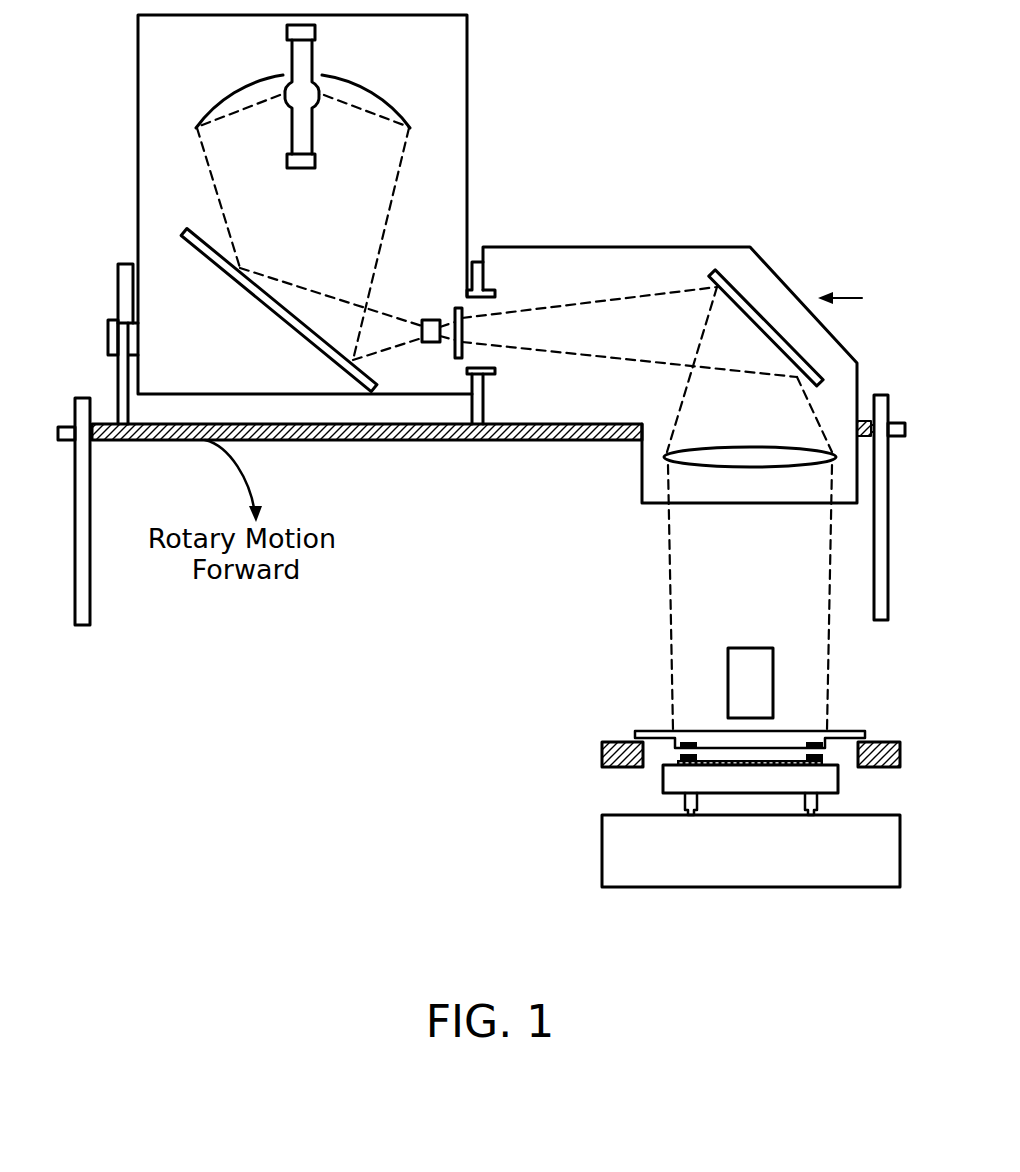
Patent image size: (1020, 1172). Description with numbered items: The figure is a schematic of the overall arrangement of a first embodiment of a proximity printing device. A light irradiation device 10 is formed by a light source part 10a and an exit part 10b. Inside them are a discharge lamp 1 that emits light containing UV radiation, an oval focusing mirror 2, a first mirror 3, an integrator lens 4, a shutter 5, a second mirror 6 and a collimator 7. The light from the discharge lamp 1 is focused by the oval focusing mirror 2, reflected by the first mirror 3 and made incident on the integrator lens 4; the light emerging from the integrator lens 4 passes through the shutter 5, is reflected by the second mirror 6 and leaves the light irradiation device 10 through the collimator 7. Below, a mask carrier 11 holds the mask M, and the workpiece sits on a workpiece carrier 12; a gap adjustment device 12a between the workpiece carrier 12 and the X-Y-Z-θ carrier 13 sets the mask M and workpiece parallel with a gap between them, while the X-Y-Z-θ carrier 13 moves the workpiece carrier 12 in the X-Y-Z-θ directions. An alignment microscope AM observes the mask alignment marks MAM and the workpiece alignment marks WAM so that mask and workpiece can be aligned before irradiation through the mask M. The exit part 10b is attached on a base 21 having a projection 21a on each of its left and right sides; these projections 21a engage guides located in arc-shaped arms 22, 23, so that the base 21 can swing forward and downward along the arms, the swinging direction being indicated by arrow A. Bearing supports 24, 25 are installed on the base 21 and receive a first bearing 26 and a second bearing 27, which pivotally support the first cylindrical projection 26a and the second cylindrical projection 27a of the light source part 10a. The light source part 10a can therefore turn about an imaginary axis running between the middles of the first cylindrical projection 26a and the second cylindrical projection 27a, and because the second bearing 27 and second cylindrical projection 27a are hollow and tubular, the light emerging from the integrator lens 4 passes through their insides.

The discharge lamp 1 is at (295, 58).
The oval focusing mirror 2 is at (381, 88).
The first mirror 3 is at (321, 348).
The integrator lens 4 is at (432, 320).
The shutter 5 is at (461, 356).
The second mirror 6 is at (756, 308).
The collimator 7 is at (693, 470).
The light irradiation device 10 is at (566, 171).
The light source part 10a is at (467, 81).
The exit part 10b is at (690, 247).
The mask carrier 11 is at (602, 752).
The workpiece carrier 12 is at (675, 783).
The gap adjustment device 12a is at (690, 810).
The X-Y-Z-θ carrier 13 is at (602, 863).
The base 21 is at (430, 440).
The projection 21a is at (66, 427).
The arc-shaped arm 22 is at (87, 562).
The arc-shaped arm 23 is at (874, 585).
The bearing support 24 is at (128, 412).
The bearing support 25 is at (485, 410).
The first bearing 26 is at (118, 292).
The first cylindrical projection 26a is at (108, 338).
The second bearing 27 is at (488, 271).
The second cylindrical projection 27a is at (488, 358).
The direction indicator A is at (852, 305).
The alignment microscope AM is at (728, 665).
The mask M is at (665, 745).
The mask alignment marks MAM is at (683, 748).
The workpiece alignment marks WAM is at (690, 757).